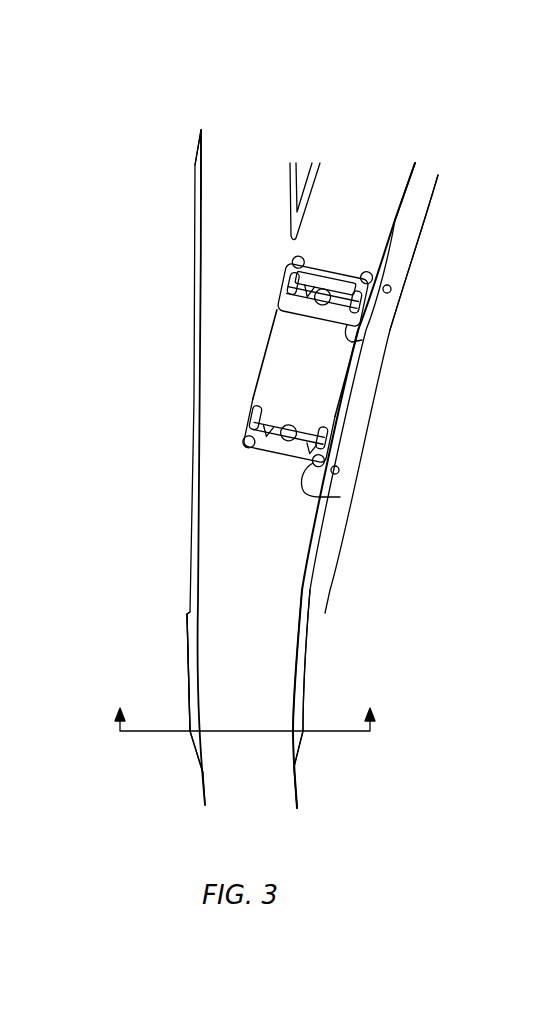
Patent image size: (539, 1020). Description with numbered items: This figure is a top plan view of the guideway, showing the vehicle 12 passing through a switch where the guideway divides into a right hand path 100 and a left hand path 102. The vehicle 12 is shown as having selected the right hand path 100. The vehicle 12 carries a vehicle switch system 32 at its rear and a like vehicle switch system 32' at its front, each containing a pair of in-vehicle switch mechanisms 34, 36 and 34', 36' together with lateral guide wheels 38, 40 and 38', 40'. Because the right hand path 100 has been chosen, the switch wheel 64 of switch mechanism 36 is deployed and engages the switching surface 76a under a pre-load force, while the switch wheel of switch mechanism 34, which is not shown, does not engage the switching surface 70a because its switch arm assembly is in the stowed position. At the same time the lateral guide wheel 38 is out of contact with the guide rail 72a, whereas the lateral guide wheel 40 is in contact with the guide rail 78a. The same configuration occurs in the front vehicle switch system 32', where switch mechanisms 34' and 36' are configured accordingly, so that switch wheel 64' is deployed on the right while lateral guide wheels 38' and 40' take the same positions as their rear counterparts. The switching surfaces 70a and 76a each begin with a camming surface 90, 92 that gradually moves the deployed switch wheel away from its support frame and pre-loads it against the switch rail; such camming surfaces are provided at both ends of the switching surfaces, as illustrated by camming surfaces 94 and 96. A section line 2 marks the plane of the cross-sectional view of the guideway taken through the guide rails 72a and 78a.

The section line 2- 2 is at (244, 702).
The vehicle 12 is at (242, 337).
The vehicle switch system 32 is at (243, 505).
The vehicle switch system 32' is at (350, 214).
The in-vehicle switch mechanism 34 is at (195, 396).
The in-vehicle switch mechanism 34' is at (252, 290).
The in-vehicle switch mechanism 36 is at (375, 424).
The in-vehicle switch mechanism 36' is at (398, 325).
The lateral guide wheel 38 is at (189, 456).
The lateral guide wheel 38' is at (255, 246).
The lateral guide wheel 40 is at (354, 484).
The lateral guide wheel 40' is at (414, 297).
The switch wheel 64 is at (384, 454).
The switch wheel 64' is at (436, 303).
The switching surface 70a is at (187, 652).
The guide rail 72a is at (178, 622).
The switching surface 76a is at (303, 647).
The guide rail 78a is at (315, 607).
The camming surface 90 is at (195, 748).
The camming surface 92 is at (303, 748).
The camming surface 94 is at (199, 138).
The camming surface 96 is at (398, 219).
The right hand path 100 is at (380, 155).
The left hand path 102 is at (246, 167).